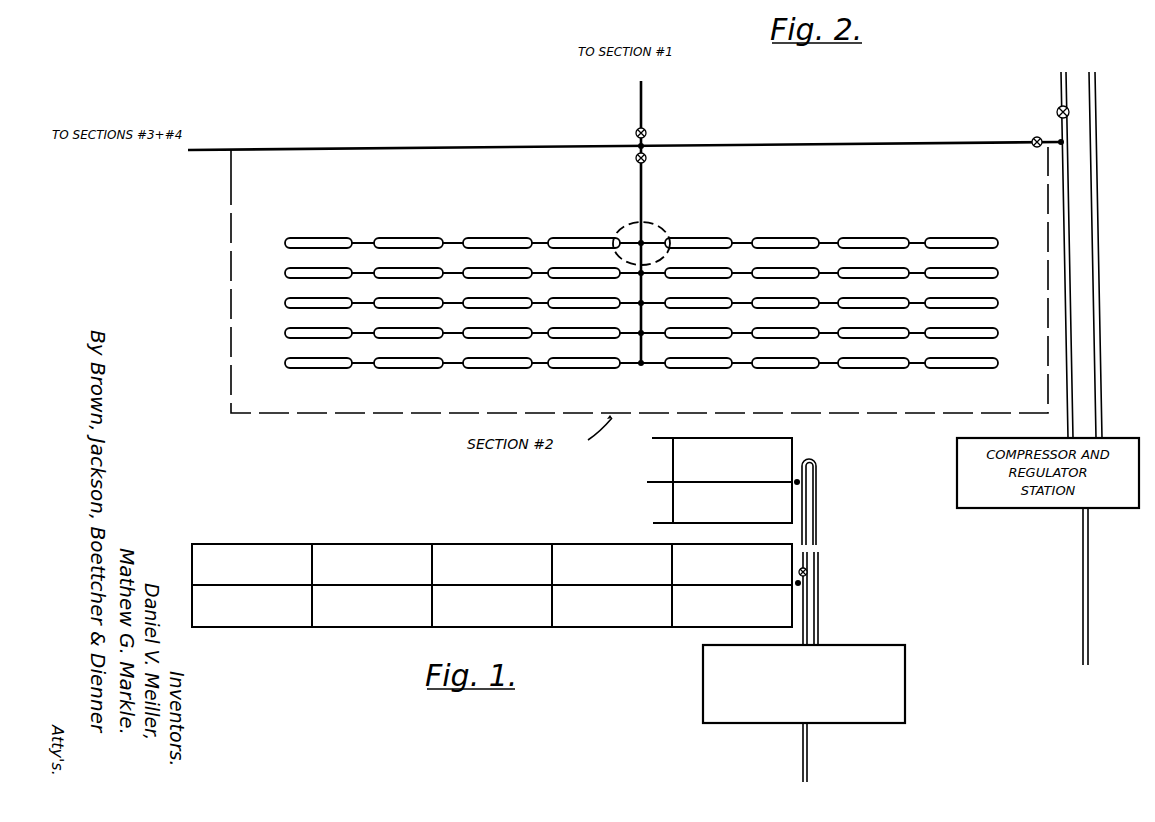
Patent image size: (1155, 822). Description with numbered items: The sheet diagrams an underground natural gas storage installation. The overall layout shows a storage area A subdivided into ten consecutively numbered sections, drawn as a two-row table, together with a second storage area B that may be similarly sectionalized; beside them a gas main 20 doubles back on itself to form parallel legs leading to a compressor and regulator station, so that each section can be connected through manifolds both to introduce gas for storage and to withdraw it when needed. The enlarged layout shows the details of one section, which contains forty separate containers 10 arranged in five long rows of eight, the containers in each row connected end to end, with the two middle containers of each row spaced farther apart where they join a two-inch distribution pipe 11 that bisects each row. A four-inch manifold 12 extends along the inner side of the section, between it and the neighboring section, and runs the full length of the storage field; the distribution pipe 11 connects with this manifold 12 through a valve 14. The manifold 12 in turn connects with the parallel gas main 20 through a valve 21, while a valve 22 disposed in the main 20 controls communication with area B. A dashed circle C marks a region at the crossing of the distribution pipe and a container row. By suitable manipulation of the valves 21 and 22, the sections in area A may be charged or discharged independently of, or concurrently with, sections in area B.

In FIG. 2, the containers 10 is at (784, 242).
In FIG. 2, the distribution pipe 11 is at (640, 185).
In FIG. 2, the manifold 12 is at (808, 144).
In FIG. 2, the valve 14 is at (650, 158).
In FIG. 2, the gas main 20 is at (1068, 262).
In FIG. 1, the gas main 20 is at (813, 521).
In FIG. 2, the valve 21 is at (1034, 137).
In FIG. 1, the valve 21 is at (800, 482).
In FIG. 2, the valve 22 is at (1057, 109).
In FIG. 1, the valve 22 is at (806, 570).
In FIG. 1, the storage area A is at (461, 543).
In FIG. 1, the storage area B is at (797, 446).
In FIG. 2, the detail circle C is at (668, 229).